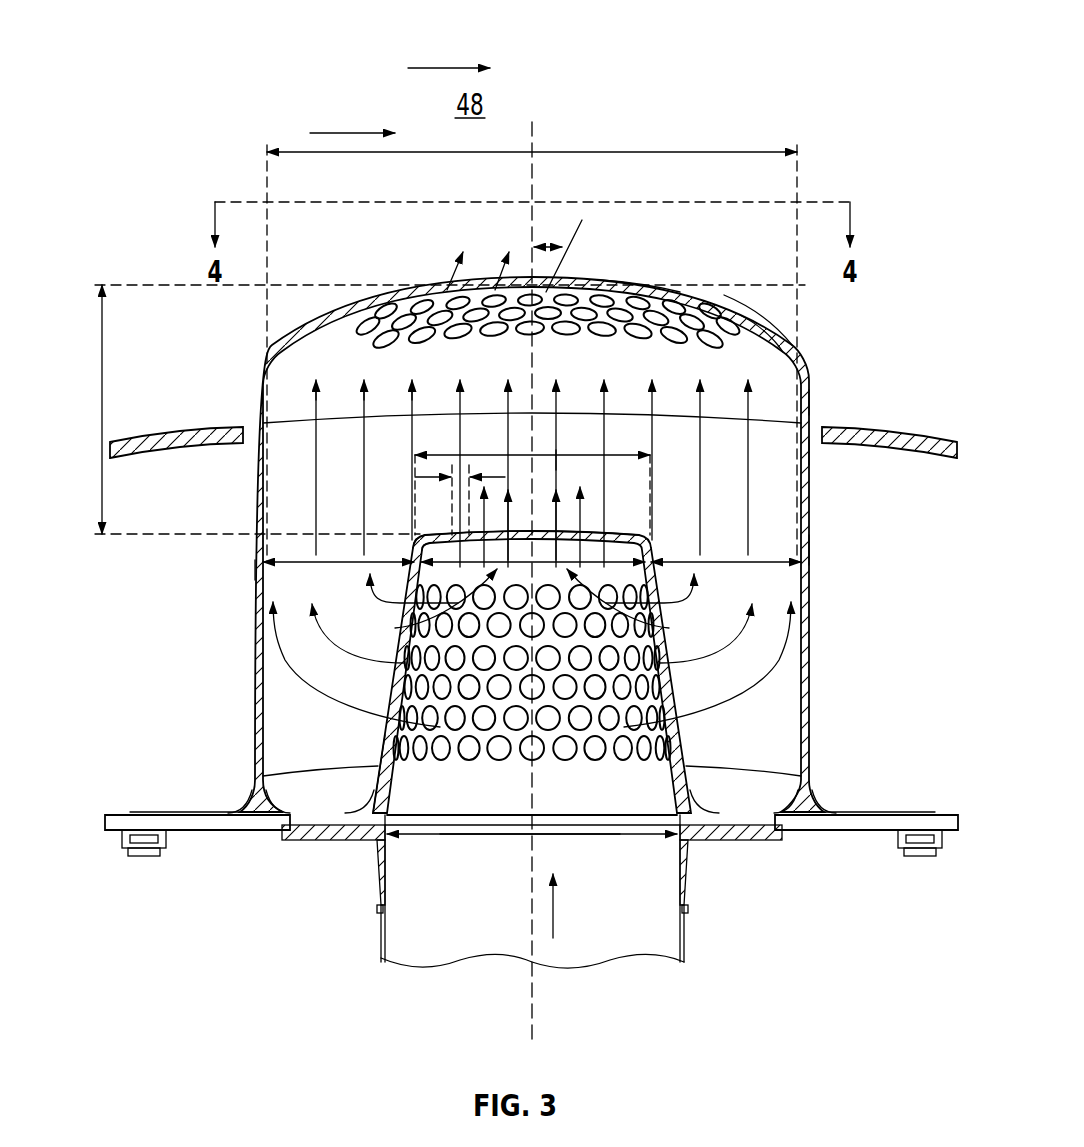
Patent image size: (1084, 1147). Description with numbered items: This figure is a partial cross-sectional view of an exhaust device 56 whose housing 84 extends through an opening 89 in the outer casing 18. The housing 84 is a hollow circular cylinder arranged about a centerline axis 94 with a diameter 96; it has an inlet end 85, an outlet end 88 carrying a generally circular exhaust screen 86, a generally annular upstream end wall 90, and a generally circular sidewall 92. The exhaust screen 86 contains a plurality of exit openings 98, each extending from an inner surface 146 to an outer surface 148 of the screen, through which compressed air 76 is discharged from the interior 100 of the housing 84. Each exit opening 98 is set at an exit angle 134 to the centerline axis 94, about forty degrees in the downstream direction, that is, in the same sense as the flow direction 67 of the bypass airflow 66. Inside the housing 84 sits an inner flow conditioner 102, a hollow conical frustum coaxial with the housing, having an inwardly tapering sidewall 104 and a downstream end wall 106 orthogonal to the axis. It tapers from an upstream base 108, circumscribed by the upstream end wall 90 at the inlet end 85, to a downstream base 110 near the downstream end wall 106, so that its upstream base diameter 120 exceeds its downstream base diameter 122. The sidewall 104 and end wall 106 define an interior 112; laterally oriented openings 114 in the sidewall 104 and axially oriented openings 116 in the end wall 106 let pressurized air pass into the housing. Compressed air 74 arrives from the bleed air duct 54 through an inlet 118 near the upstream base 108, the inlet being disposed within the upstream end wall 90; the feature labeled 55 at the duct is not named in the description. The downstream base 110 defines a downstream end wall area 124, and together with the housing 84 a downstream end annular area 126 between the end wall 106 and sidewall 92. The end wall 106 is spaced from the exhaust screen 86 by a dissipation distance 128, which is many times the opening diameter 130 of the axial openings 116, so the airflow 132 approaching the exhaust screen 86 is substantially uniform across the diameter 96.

The outer casing 18 is at (905, 437).
The bleed air duct 54 is at (688, 958).
The outlet pipe wall 55 is at (374, 945).
The exhaust device 56 is at (120, 570).
The bypass airflow 66 is at (350, 133).
The flow direction 67 is at (437, 68).
The compressed air 74 is at (576, 492).
The compressed air 76 is at (449, 286).
The housing 84 is at (812, 584).
The inlet end 85 is at (311, 846).
The exhaust screen 86 is at (641, 277).
The outlet end 88 is at (813, 400).
The opening 89 is at (814, 452).
The upstream end wall 90 is at (262, 830).
The sidewall 92 is at (812, 550).
The centerline axis 94 is at (540, 123).
The diameter 96 is at (670, 152).
The exit openings 98 is at (560, 284).
The interior 100 is at (328, 452).
The inner flow conditioner 102 is at (380, 752).
The sidewall 104 is at (680, 693).
The downstream end wall 106 is at (440, 538).
The upstream base 108 is at (696, 800).
The downstream base 110 is at (421, 536).
The interior 112 is at (396, 630).
The laterally oriented openings 114 is at (668, 630).
The axially oriented openings 116 is at (530, 525).
The inlet 118 is at (438, 840).
The upstream base diameter 120 is at (622, 837).
The downstream base diameter 122 is at (641, 542).
The downstream end wall area 124 is at (562, 452).
The downstream end annular area 126 is at (290, 563).
The dissipation distance 128 is at (104, 360).
The opening diameter 130 is at (428, 473).
The airflow 132 is at (361, 400).
The exit angle 134 is at (555, 244).
The inner surface 146 is at (783, 360).
The outer surface 148 is at (771, 323).